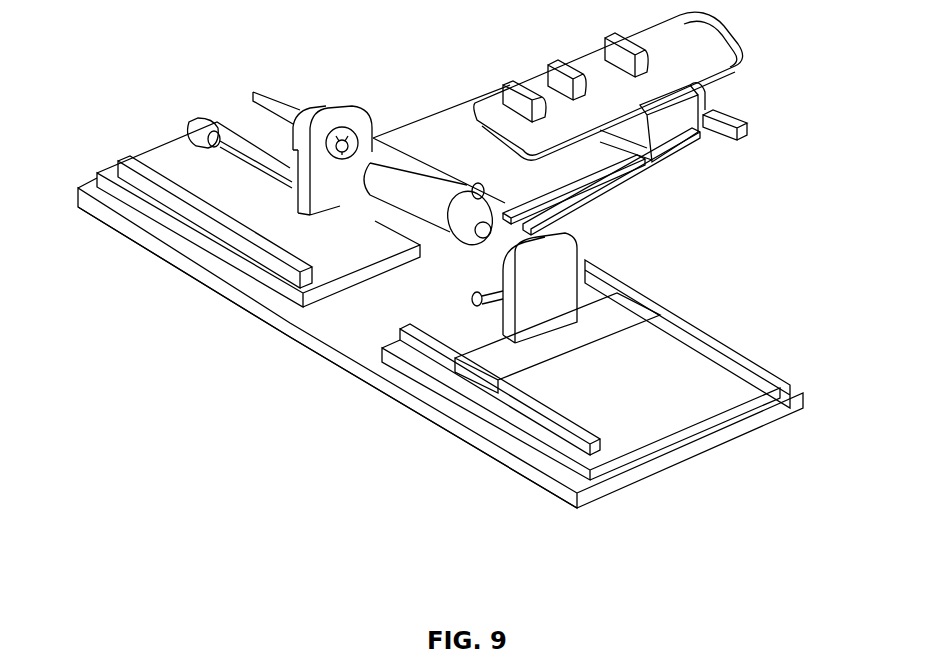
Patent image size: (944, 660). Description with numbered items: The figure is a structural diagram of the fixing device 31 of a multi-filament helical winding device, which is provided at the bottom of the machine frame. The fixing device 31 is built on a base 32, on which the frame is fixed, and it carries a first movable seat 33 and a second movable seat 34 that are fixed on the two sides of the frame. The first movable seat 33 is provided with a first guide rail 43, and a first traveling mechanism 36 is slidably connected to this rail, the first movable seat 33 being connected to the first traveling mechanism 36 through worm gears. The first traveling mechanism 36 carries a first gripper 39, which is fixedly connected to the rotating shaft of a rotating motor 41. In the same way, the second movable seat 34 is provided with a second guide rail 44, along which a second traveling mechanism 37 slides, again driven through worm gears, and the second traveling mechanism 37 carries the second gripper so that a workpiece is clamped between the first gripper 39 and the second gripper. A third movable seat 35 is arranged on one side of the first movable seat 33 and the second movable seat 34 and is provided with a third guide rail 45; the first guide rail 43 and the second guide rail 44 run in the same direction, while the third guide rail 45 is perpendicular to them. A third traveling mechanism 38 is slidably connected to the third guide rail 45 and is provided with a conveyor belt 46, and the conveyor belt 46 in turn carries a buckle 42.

The fixing device 31 is at (203, 293).
The base 32 is at (285, 335).
The first movable seat 33 is at (142, 208).
The second movable seat 34 is at (455, 395).
The third movable seat 35 is at (627, 172).
The first traveling mechanism 36 is at (262, 208).
The second traveling mechanism 37 is at (615, 319).
The third traveling mechanism 38 is at (677, 137).
The first gripper 39 is at (345, 138).
The rotating motor 41 is at (310, 110).
The buckle 42 is at (543, 85).
The first guide rail 43 is at (133, 160).
The second guide rail 44 is at (730, 378).
The third guide rail 45 is at (720, 120).
The conveyor belt 46 is at (683, 55).
The element workpiece is at (423, 210).